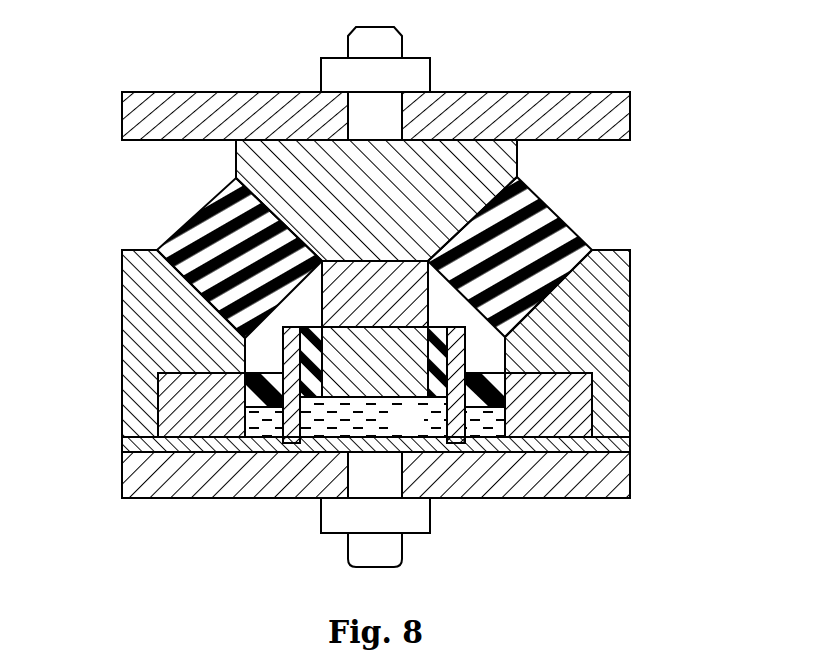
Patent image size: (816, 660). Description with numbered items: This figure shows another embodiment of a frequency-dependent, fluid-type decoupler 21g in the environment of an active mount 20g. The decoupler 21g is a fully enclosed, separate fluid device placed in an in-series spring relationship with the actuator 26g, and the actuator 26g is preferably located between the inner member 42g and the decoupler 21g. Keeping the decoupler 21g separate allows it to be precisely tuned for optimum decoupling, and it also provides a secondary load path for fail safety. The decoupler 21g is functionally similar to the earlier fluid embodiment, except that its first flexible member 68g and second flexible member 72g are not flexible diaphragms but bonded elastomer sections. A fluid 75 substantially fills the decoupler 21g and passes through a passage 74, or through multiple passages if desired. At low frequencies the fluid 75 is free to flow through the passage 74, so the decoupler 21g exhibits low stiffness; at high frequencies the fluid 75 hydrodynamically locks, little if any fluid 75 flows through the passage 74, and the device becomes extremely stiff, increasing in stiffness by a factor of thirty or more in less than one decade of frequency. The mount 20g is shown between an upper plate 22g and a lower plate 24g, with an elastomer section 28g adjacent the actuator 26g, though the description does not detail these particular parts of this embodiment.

The mount 20g is at (98, 418).
The decoupler 21g is at (352, 424).
The top mounting plate 22g is at (630, 110).
The bottom mounting plate 24g is at (631, 463).
The actuator 26g is at (402, 270).
The elastomeric block 28g is at (541, 199).
The inner member 42g is at (233, 152).
The first flexible member 68g is at (284, 323).
The second flexible member 72g is at (267, 378).
The passage 74 is at (485, 412).
The fluid 75 is at (421, 431).